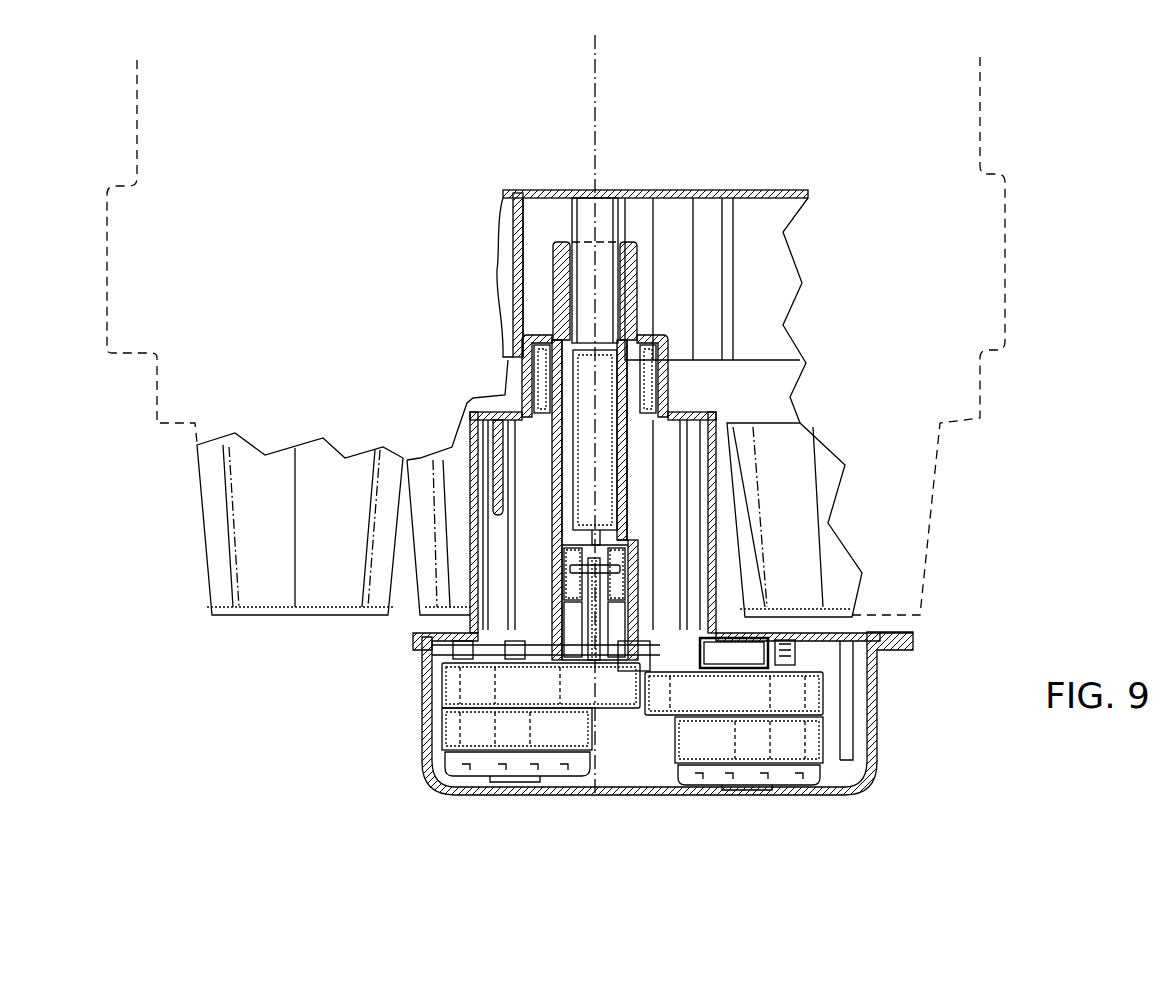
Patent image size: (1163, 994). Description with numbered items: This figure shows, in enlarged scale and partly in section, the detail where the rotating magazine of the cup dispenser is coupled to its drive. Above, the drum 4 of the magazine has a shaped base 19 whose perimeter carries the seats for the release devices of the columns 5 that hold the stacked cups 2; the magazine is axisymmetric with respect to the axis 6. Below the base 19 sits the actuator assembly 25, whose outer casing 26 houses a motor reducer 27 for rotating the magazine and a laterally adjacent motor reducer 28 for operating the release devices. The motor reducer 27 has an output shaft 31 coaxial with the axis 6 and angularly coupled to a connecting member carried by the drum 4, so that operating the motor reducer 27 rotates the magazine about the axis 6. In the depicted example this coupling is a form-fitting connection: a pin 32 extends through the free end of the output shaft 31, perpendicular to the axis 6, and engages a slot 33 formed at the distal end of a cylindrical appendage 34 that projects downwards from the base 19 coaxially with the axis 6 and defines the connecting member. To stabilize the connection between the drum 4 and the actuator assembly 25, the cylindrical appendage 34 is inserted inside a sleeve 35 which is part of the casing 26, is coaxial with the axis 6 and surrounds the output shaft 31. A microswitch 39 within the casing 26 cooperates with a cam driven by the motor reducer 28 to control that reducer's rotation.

The cup 2 is at (260, 577).
The drum 4 is at (731, 188).
The column 5 is at (1028, 170).
The axis 6 is at (596, 125).
The base 19 is at (706, 215).
The actuator assembly 25 is at (409, 712).
The outer casing 26 is at (430, 780).
The motor reducer 27 is at (465, 735).
The motor reducer 28 is at (783, 740).
The output shaft 31 is at (598, 590).
The pin 32 is at (605, 570).
The slot 33 is at (576, 605).
The cylindrical appendage 34 is at (620, 490).
The sleeve 35 is at (557, 500).
The microswitch 39 is at (725, 655).